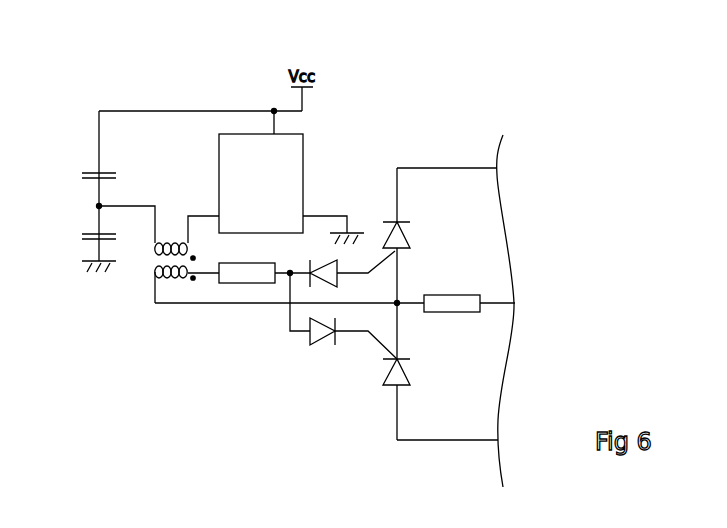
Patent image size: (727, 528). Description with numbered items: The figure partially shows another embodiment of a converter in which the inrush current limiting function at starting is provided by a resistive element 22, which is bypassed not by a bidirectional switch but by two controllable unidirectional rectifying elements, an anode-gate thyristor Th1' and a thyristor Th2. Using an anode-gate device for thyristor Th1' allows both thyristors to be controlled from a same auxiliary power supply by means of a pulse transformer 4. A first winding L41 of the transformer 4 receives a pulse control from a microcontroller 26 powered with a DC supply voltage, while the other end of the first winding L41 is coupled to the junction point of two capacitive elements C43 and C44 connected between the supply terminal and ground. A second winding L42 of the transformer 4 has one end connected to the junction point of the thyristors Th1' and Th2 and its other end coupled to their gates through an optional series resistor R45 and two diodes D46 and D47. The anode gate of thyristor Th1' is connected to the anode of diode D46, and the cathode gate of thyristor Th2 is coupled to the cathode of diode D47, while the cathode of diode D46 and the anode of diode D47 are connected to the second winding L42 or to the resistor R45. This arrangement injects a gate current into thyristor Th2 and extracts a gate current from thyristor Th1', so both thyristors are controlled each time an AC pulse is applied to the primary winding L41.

The transformer 4 is at (158, 269).
The first winding L41 is at (170, 242).
The second winding L42 is at (176, 280).
The capacitive element C43 is at (77, 178).
The capacitive element C44 is at (77, 248).
The microcontroller 26 is at (305, 149).
The series resistor R45 is at (264, 263).
The diode D46 is at (352, 275).
The diode D47 is at (348, 344).
The anode-gate thyristor Th1' is at (418, 235).
The thyristor Th2 is at (416, 371).
The resistive element 22 is at (460, 302).